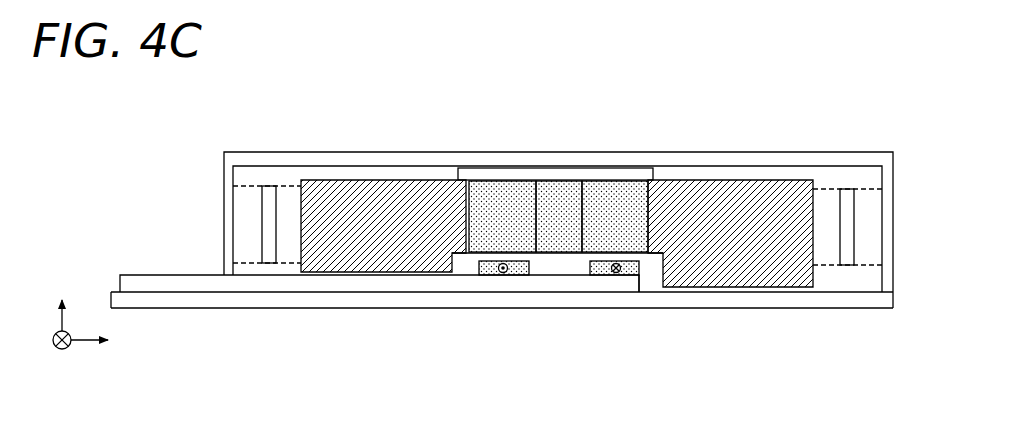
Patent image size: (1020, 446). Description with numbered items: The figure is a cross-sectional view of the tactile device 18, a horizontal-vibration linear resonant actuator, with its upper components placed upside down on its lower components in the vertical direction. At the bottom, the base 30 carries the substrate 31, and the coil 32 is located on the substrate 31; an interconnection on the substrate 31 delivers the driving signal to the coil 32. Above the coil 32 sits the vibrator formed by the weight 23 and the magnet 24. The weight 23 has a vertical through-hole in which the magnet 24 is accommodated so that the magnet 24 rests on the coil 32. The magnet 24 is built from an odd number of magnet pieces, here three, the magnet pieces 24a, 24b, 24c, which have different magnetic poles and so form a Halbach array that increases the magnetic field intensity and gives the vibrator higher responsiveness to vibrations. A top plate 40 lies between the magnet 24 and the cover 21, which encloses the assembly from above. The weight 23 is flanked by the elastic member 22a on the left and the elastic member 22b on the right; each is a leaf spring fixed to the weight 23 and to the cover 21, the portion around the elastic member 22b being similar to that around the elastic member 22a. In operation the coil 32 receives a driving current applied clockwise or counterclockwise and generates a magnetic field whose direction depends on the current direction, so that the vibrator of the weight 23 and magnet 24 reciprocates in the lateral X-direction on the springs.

The tactile device 18 is at (228, 123).
The cover 21 is at (743, 158).
The elastic member 22a is at (268, 184).
The elastic member 22b is at (847, 186).
The weight 23 is at (364, 188).
The magnet 24 is at (450, 113).
The magnet piece 24a is at (475, 186).
The magnet piece 24b is at (553, 186).
The magnet piece 24c is at (597, 186).
The base 30 is at (138, 287).
The substrate 31 is at (183, 275).
The coil 32 is at (489, 276).
The top plate 40 is at (643, 168).